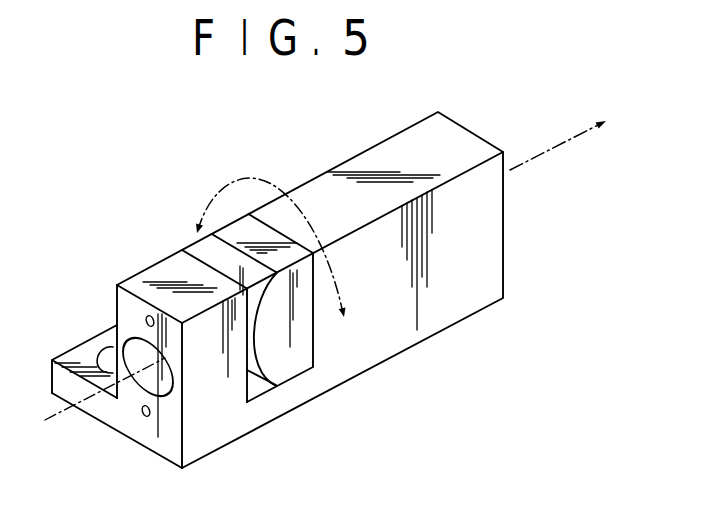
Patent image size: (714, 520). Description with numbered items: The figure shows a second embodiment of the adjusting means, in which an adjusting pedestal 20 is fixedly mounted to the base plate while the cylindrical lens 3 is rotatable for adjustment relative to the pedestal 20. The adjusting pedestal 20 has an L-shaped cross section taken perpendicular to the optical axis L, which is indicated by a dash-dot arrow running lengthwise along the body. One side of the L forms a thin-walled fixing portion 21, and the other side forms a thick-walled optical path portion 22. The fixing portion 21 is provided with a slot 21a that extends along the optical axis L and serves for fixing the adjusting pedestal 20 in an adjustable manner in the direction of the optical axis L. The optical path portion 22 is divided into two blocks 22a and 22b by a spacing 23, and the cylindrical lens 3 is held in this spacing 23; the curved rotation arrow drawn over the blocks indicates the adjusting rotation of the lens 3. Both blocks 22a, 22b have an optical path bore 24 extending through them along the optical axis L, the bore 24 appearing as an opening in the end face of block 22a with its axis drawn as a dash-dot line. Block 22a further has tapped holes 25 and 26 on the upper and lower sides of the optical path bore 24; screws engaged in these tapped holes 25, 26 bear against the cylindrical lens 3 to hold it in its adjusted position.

The cylindrical lens 3 is at (295, 363).
The adjusting pedestal 20 is at (445, 340).
The fixing portion 21 is at (72, 355).
The slot 21a is at (107, 358).
The optical path portion 22 is at (248, 138).
The block 22a is at (158, 272).
The block 22b is at (293, 190).
The spacing 23 is at (258, 392).
The optical path bore 24 is at (148, 383).
The tapped hole 25 is at (146, 321).
The tapped hole 26 is at (143, 413).
The optical axis L is at (510, 170).